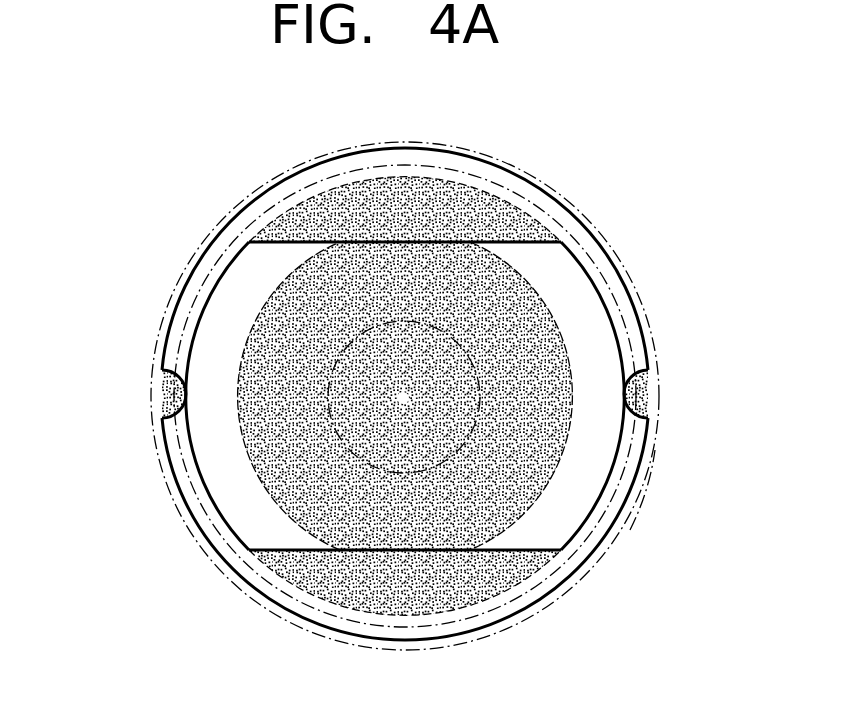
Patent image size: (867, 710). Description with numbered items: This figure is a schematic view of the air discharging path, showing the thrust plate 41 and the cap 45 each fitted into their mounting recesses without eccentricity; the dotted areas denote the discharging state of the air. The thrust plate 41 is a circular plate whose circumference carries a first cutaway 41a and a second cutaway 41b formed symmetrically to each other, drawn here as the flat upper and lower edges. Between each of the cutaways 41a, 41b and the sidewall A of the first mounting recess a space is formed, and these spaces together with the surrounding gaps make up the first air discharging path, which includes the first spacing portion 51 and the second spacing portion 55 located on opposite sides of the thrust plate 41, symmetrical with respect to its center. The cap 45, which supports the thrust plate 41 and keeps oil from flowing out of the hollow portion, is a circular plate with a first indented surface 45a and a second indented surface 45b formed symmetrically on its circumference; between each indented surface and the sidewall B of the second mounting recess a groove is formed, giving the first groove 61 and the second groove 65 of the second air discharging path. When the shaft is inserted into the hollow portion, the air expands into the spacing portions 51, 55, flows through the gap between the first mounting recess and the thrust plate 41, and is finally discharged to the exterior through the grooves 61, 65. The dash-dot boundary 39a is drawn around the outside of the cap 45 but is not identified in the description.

The inner circumferential surface of housing 39a is at (536, 183).
The thrust plate 41 is at (235, 498).
The first cutaway 41a is at (312, 240).
The second cutaway 41b is at (278, 552).
The cap 45 is at (635, 302).
The first indented surface 45a is at (163, 412).
The second indented surface 45b is at (648, 413).
The first spacing portion 51 is at (405, 209).
The second spacing portion 55 is at (405, 582).
The first groove 61 is at (163, 392).
The second groove 65 is at (648, 385).
The inner wall of the first mounting recess A is at (623, 340).
The inner wall of the second mounting recess B is at (645, 468).